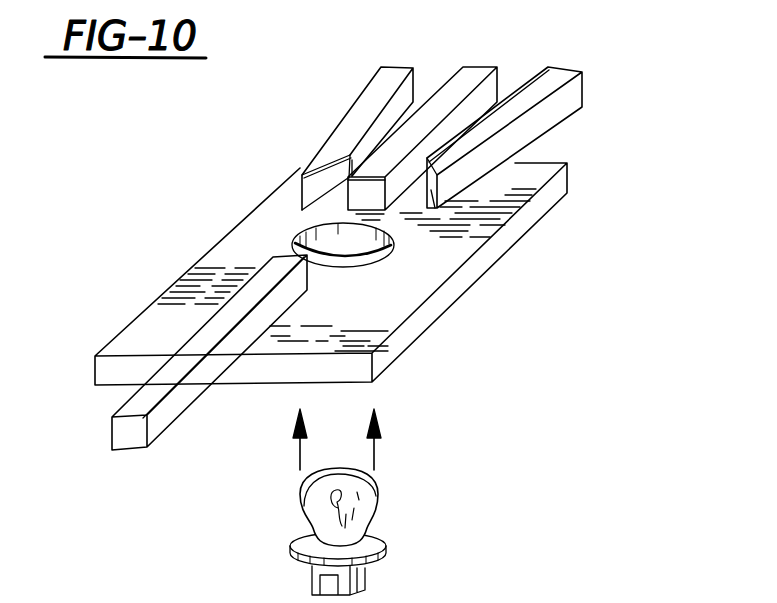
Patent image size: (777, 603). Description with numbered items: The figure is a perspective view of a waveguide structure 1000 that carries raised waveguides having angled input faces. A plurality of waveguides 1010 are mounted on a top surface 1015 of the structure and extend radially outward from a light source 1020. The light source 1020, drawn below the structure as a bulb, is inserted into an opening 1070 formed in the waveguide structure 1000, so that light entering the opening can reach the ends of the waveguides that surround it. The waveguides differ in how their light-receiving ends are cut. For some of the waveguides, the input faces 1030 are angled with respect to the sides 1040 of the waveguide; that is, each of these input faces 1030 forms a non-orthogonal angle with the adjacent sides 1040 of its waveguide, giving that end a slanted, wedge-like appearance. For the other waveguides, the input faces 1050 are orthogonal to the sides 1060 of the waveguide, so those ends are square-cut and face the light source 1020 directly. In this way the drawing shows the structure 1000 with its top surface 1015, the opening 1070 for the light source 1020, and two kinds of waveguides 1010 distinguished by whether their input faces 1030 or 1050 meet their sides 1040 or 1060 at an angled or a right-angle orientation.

The waveguide structure 1000 is at (132, 335).
The waveguides 1010 is at (383, 80).
The top surface 1015 is at (512, 202).
The light source 1020 is at (378, 512).
The input faces 1030 is at (333, 180).
The sides 1040 is at (368, 150).
The input faces 1050 is at (348, 192).
The sides 1060 is at (490, 94).
The opening 1070 is at (343, 258).